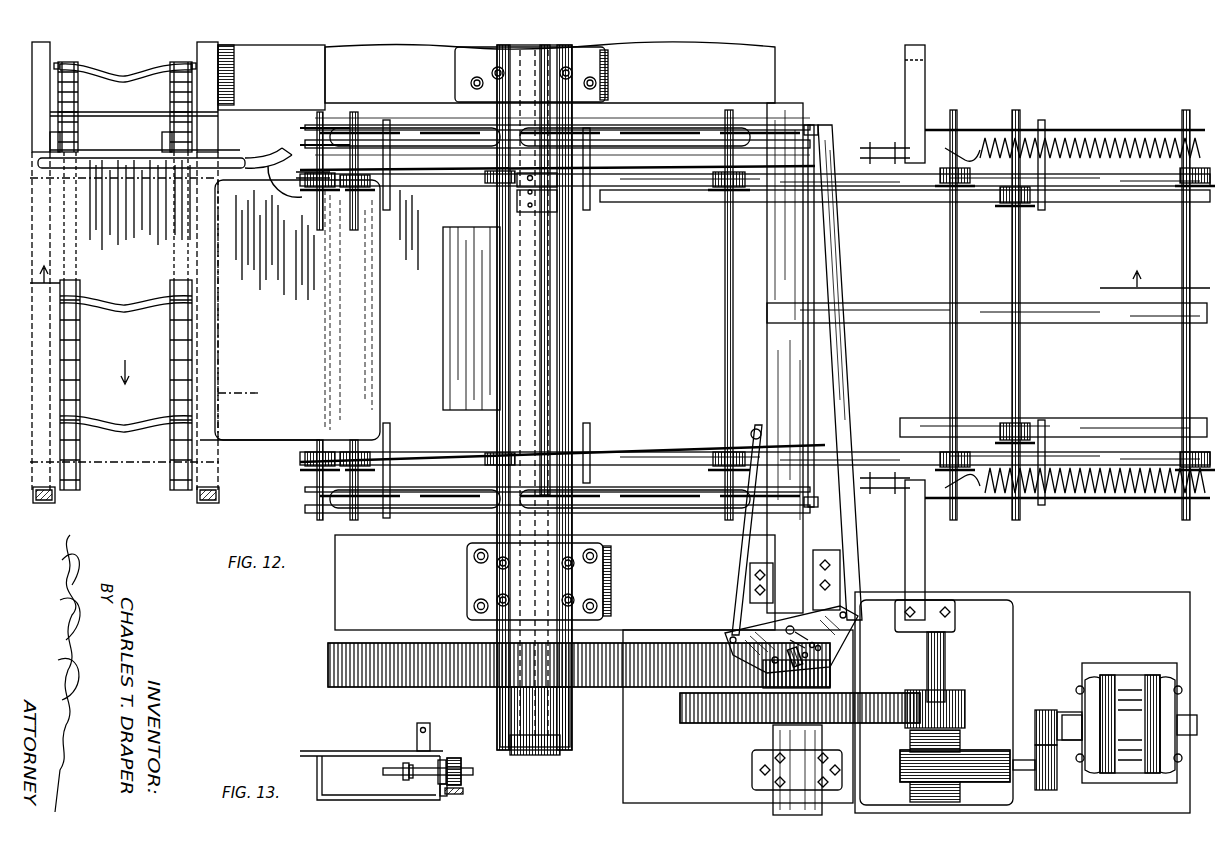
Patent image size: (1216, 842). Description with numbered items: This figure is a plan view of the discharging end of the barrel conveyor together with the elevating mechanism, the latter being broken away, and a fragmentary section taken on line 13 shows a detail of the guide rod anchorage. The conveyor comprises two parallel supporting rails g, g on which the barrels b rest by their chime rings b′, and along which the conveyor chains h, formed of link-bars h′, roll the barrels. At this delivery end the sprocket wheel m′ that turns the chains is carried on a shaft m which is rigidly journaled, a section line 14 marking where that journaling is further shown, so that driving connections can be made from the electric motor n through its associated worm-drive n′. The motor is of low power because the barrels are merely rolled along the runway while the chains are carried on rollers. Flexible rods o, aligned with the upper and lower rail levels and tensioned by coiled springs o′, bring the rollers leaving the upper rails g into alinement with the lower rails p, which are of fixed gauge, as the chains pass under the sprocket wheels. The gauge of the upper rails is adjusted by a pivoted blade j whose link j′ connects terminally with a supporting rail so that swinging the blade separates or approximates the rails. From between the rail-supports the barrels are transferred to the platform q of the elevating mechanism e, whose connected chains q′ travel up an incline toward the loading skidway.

In FIG. 12, the platform q is at (125, 284).
In FIG. 12, the connected chains q′ is at (76, 432).
In FIG. 12, the elevating mechanism e is at (175, 354).
In FIG. 12, the barrels b is at (244, 393).
In FIG. 12, the chime ring b′ is at (122, 470).
In FIG. 12, the section line 14— 14 is at (620, 268).
In FIG. 12, the section line 13— 13 is at (930, 420).
In FIG. 12, the shaft m is at (565, 274).
In FIG. 12, the link-bars h′ is at (305, 127).
In FIG. 12, the flexible rods o is at (462, 174).
In FIG. 13, the flexible rods o is at (442, 760).
In FIG. 12, the supporting rails g is at (674, 188).
In FIG. 13, the supporting rails g is at (452, 794).
In FIG. 12, the lower rails p is at (1082, 203).
In FIG. 12, the coiled springs o′ is at (1130, 140).
In FIG. 12, the conveyor chains h is at (1086, 130).
In FIG. 13, the conveyor chains h is at (406, 782).
In FIG. 12, the link j′ is at (738, 552).
In FIG. 12, the pivoted blade j is at (752, 632).
In FIG. 12, the worm-drive n′ is at (967, 750).
In FIG. 12, the electric motor n is at (1095, 705).
In FIG. 12, the sprocket wheel m′ is at (662, 125).